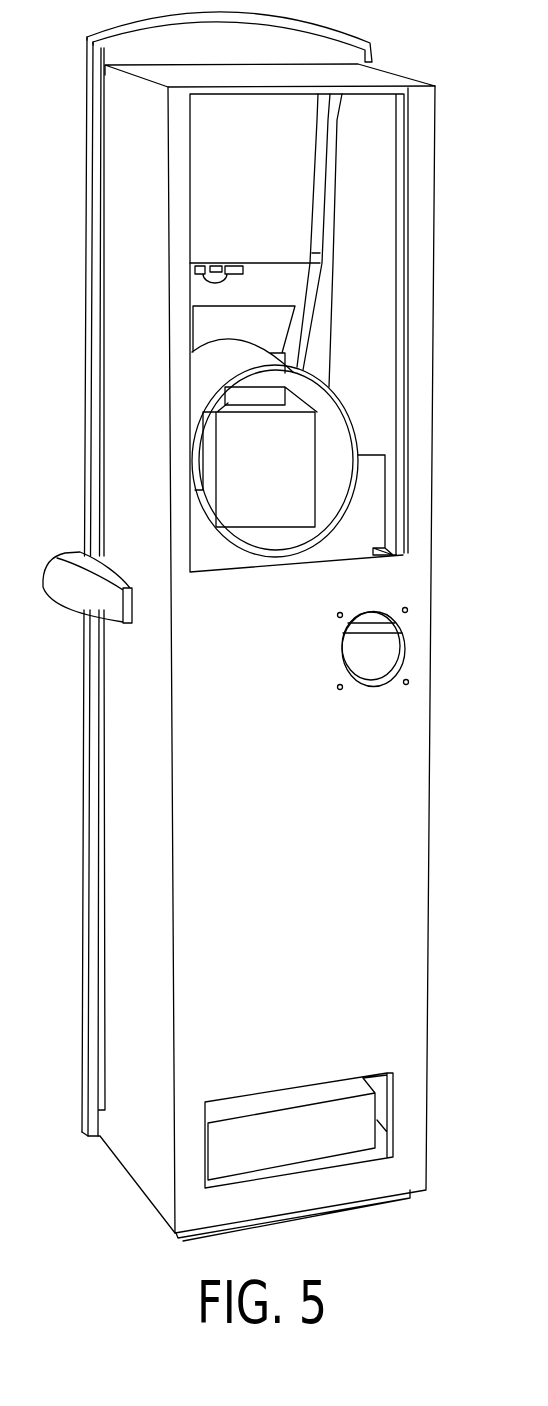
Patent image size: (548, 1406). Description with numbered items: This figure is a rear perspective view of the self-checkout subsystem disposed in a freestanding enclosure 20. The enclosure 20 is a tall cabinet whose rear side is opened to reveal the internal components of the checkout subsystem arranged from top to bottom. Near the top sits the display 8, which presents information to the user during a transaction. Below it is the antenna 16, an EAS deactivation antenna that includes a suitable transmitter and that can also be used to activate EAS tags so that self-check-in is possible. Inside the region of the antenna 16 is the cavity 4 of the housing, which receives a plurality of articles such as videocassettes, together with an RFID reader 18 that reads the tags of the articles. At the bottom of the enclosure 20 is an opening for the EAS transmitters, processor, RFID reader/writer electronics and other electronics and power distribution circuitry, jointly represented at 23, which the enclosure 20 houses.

The display 8 is at (255, 187).
The cavity 4 is at (257, 482).
The antenna 16 is at (330, 387).
The RFID reader 18 is at (252, 397).
The freestanding enclosure 20 is at (203, 842).
The electronics and power distribution circuitry 23 is at (350, 1125).